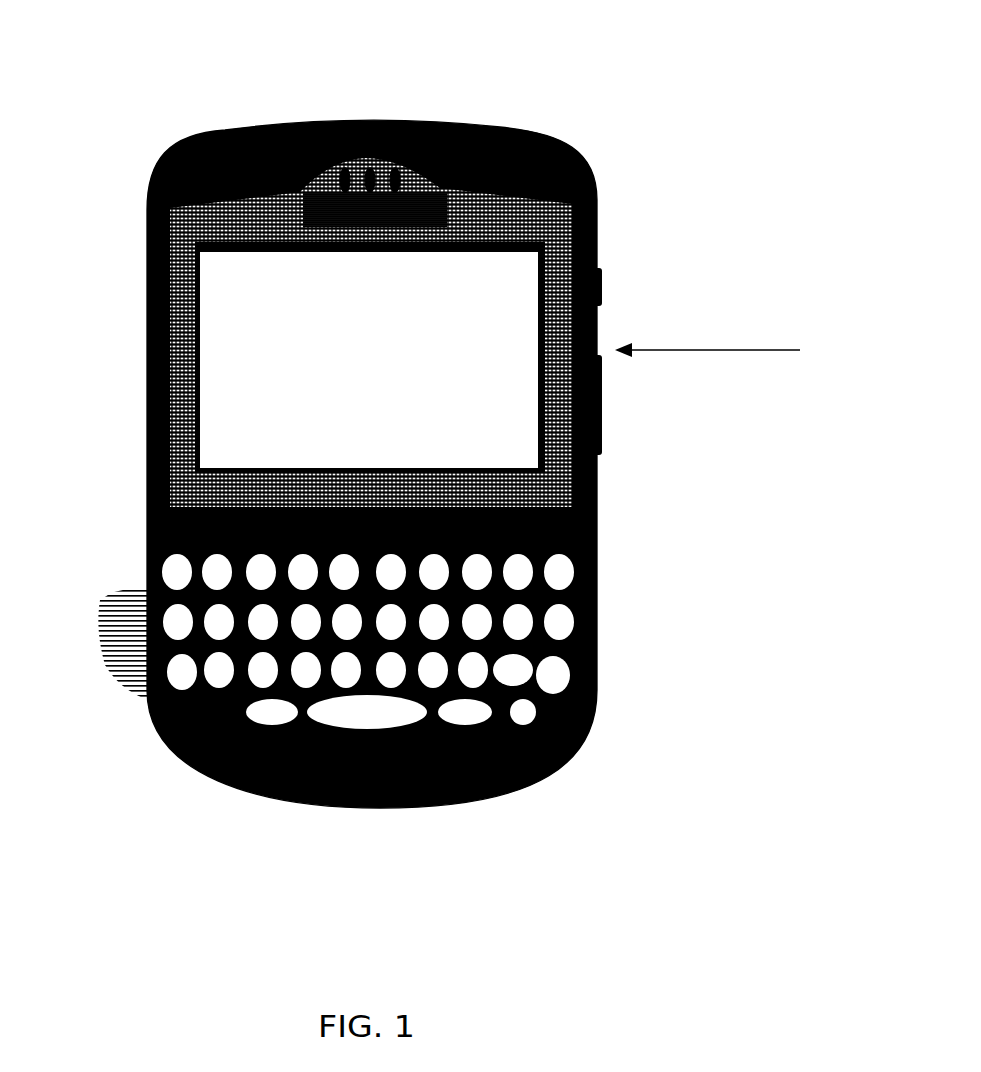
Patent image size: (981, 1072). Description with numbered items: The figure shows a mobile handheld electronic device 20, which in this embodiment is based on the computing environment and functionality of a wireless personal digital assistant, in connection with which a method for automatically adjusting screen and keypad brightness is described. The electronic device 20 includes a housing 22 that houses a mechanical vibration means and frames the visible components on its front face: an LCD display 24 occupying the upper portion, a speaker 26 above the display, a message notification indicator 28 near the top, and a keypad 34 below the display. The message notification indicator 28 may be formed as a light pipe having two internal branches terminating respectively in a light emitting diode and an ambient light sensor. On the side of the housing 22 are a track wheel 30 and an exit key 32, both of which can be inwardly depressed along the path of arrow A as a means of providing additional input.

The mobile handheld electronic device 20 is at (433, 421).
The housing 22 is at (513, 786).
The LCD display 24 is at (222, 347).
The speaker 26 is at (363, 172).
The message notification indicator 28 is at (540, 137).
The track wheel 30 is at (600, 283).
The exit key 32 is at (600, 397).
The keypad 34 is at (588, 692).